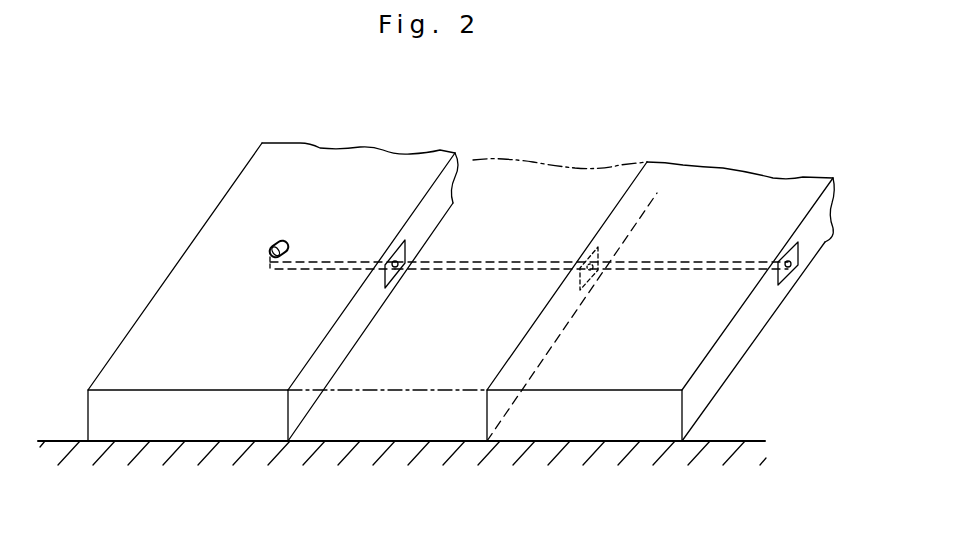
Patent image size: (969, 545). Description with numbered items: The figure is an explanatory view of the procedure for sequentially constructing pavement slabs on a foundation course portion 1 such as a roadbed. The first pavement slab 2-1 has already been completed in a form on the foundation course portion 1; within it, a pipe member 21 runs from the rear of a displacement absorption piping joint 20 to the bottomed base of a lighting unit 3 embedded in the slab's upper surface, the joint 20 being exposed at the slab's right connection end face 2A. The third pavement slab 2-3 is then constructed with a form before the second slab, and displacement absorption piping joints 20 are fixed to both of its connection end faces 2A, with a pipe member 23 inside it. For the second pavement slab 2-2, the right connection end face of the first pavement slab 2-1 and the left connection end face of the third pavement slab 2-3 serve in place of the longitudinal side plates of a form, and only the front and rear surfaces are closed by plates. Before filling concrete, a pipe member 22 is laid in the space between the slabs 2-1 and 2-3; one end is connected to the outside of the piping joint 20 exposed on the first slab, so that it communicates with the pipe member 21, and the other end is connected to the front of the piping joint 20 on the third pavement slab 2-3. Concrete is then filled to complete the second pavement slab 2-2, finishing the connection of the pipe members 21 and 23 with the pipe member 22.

The foundation course portion 1 is at (460, 455).
The first pavement slab 2-1 is at (203, 248).
The second pavement slab 2-2 is at (402, 415).
The third pavement slab 2-3 is at (745, 180).
The connection end face 2A is at (448, 192).
The lighting unit 3 is at (278, 240).
The displacement absorption piping joint 20 is at (397, 282).
The pipe member 21 is at (340, 260).
The pipe member 22 is at (512, 260).
The pipe member 23 is at (703, 262).